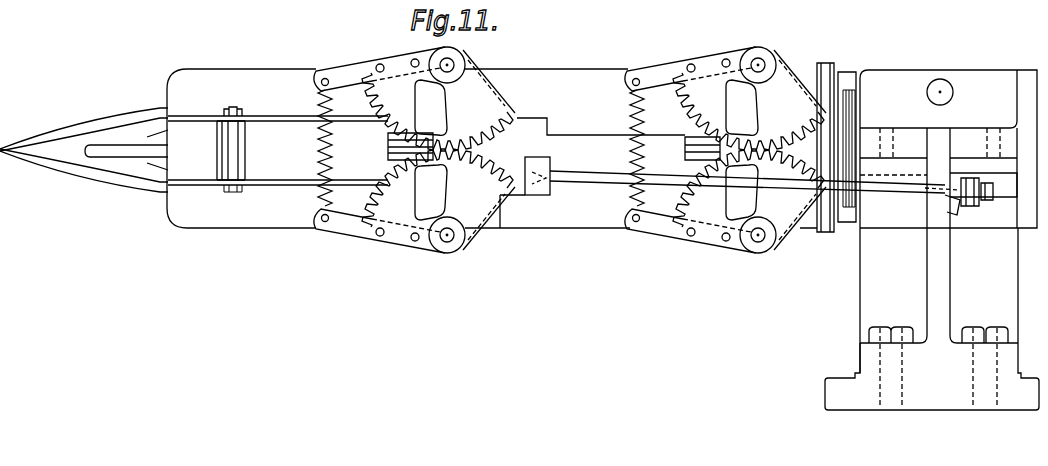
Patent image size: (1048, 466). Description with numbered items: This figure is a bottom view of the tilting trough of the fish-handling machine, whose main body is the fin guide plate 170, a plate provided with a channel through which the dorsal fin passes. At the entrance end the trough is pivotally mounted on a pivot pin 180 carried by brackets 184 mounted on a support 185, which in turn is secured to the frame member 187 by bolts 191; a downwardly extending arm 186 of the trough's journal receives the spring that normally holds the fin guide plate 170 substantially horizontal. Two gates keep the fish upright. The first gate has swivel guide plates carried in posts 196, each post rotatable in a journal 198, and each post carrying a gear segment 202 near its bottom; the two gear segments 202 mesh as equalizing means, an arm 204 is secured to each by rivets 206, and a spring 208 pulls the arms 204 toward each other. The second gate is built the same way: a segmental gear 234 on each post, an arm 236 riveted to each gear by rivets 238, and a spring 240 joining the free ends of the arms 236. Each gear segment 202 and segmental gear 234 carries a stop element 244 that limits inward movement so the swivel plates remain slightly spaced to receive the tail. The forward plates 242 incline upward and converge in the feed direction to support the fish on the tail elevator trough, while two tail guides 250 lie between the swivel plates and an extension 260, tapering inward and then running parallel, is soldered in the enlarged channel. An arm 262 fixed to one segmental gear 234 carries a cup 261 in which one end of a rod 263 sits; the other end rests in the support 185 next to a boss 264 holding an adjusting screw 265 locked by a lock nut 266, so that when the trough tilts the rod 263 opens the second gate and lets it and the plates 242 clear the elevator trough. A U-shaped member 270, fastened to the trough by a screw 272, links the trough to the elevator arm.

The fin guide plate 170 is at (572, 72).
The plate 242 is at (67, 133).
The extension 260 is at (97, 158).
The tail guide 250 is at (153, 157).
The U-shaped member 270 is at (226, 192).
The screw 272 is at (240, 113).
The spring 240 is at (319, 150).
The spring 208 is at (630, 143).
The arm 236 is at (342, 70).
The rivets 238 is at (414, 61).
The stop element 244 is at (432, 146).
The arm 262 is at (473, 205).
The segmental gear 234 is at (386, 170).
The arm 204 is at (656, 72).
The rivets 206 is at (725, 60).
The gear segment 202 is at (691, 125).
The journal 198 is at (754, 42).
The post 196 is at (759, 63).
The cup 261 is at (539, 196).
The rod 263 is at (600, 186).
The bracket 184 is at (864, 88).
The pivot pin 180 is at (838, 112).
The arm 186 is at (847, 150).
The lock nut 266 is at (968, 180).
The adjusting screw 265 is at (988, 200).
The boss 264 is at (953, 210).
The support 185 is at (946, 279).
The bolts 191 is at (888, 330).
The frame member 187 is at (835, 396).